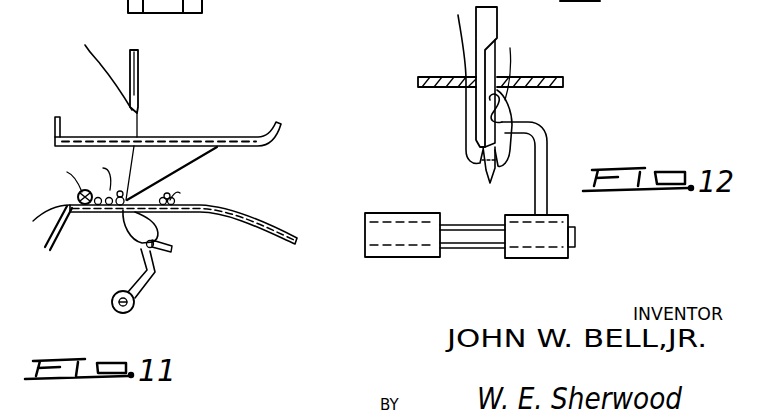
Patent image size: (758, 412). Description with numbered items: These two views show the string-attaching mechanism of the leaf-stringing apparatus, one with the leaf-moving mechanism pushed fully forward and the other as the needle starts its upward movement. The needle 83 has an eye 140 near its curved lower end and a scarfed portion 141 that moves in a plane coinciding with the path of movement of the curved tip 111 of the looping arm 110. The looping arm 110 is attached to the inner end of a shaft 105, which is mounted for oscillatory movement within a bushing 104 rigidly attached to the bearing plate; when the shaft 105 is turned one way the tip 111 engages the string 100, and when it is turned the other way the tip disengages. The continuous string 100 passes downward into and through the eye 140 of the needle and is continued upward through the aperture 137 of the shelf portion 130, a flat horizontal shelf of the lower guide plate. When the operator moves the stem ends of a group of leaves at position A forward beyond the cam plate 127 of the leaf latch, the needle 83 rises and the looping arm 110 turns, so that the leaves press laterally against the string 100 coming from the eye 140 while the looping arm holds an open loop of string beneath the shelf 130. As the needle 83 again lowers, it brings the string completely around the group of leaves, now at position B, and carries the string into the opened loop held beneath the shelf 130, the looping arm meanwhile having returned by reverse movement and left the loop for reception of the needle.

In FIG. 11, the needle 83 is at (140, 76).
In FIG. 12, the needle 83 is at (488, 22).
In FIG. 11, the string 100 is at (98, 62).
In FIG. 12, the string 100 is at (458, 32).
In FIG. 11, the bushing 104 is at (133, 308).
In FIG. 12, the bushing 104 is at (390, 213).
In FIG. 11, the shaft 105 is at (134, 302).
In FIG. 12, the shaft 105 is at (474, 241).
In FIG. 12, the looping arm 110 is at (548, 160).
In FIG. 11, the curved tip 111 is at (172, 245).
In FIG. 12, the curved tip 111 is at (503, 103).
In FIG. 11, the cam plate 127 is at (193, 155).
In FIG. 11, the shelf portion 130 is at (120, 213).
In FIG. 12, the shelf portion 130 is at (560, 78).
In FIG. 12, the aperture 137 is at (463, 89).
In FIG. 11, the eye 140 is at (138, 113).
In FIG. 12, the eye 140 is at (482, 165).
In FIG. 11, the scarfed portion 141 is at (140, 56).
In FIG. 12, the scarfed portion 141 is at (485, 63).